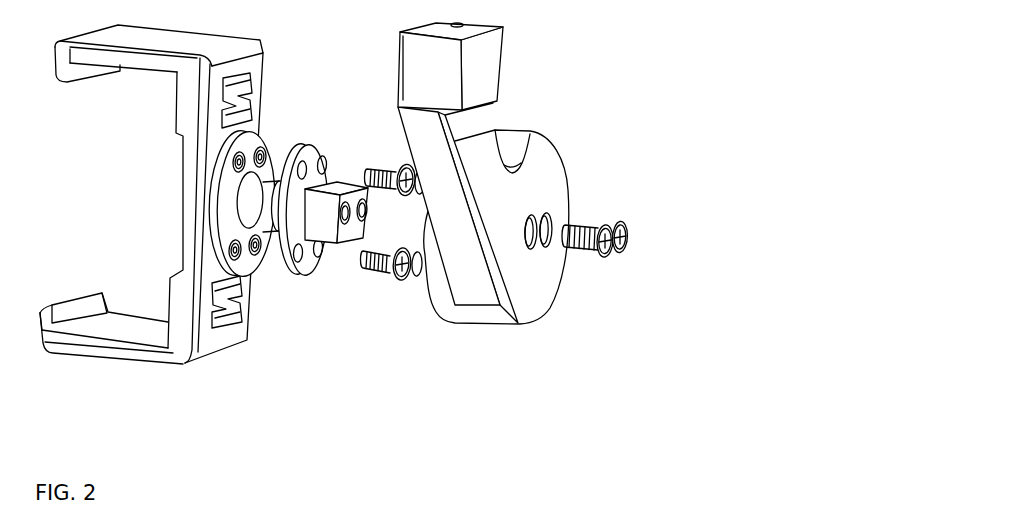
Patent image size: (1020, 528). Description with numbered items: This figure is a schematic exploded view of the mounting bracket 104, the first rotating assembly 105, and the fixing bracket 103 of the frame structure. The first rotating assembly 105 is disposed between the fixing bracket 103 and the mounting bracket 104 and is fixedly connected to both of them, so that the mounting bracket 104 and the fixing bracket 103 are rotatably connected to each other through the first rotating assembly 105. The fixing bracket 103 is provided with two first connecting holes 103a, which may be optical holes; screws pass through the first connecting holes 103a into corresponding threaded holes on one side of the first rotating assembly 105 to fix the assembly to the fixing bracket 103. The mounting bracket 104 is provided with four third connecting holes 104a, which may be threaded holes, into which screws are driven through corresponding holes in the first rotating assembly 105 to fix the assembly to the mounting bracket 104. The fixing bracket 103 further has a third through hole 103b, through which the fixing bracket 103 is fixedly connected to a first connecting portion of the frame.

The fixing bracket 103 is at (488, 213).
The first connecting hole 103a is at (528, 238).
The third through hole 103b is at (447, 33).
The mounting bracket 104 is at (172, 312).
The third connecting hole 104a is at (263, 153).
The first rotating assembly 105 is at (305, 265).